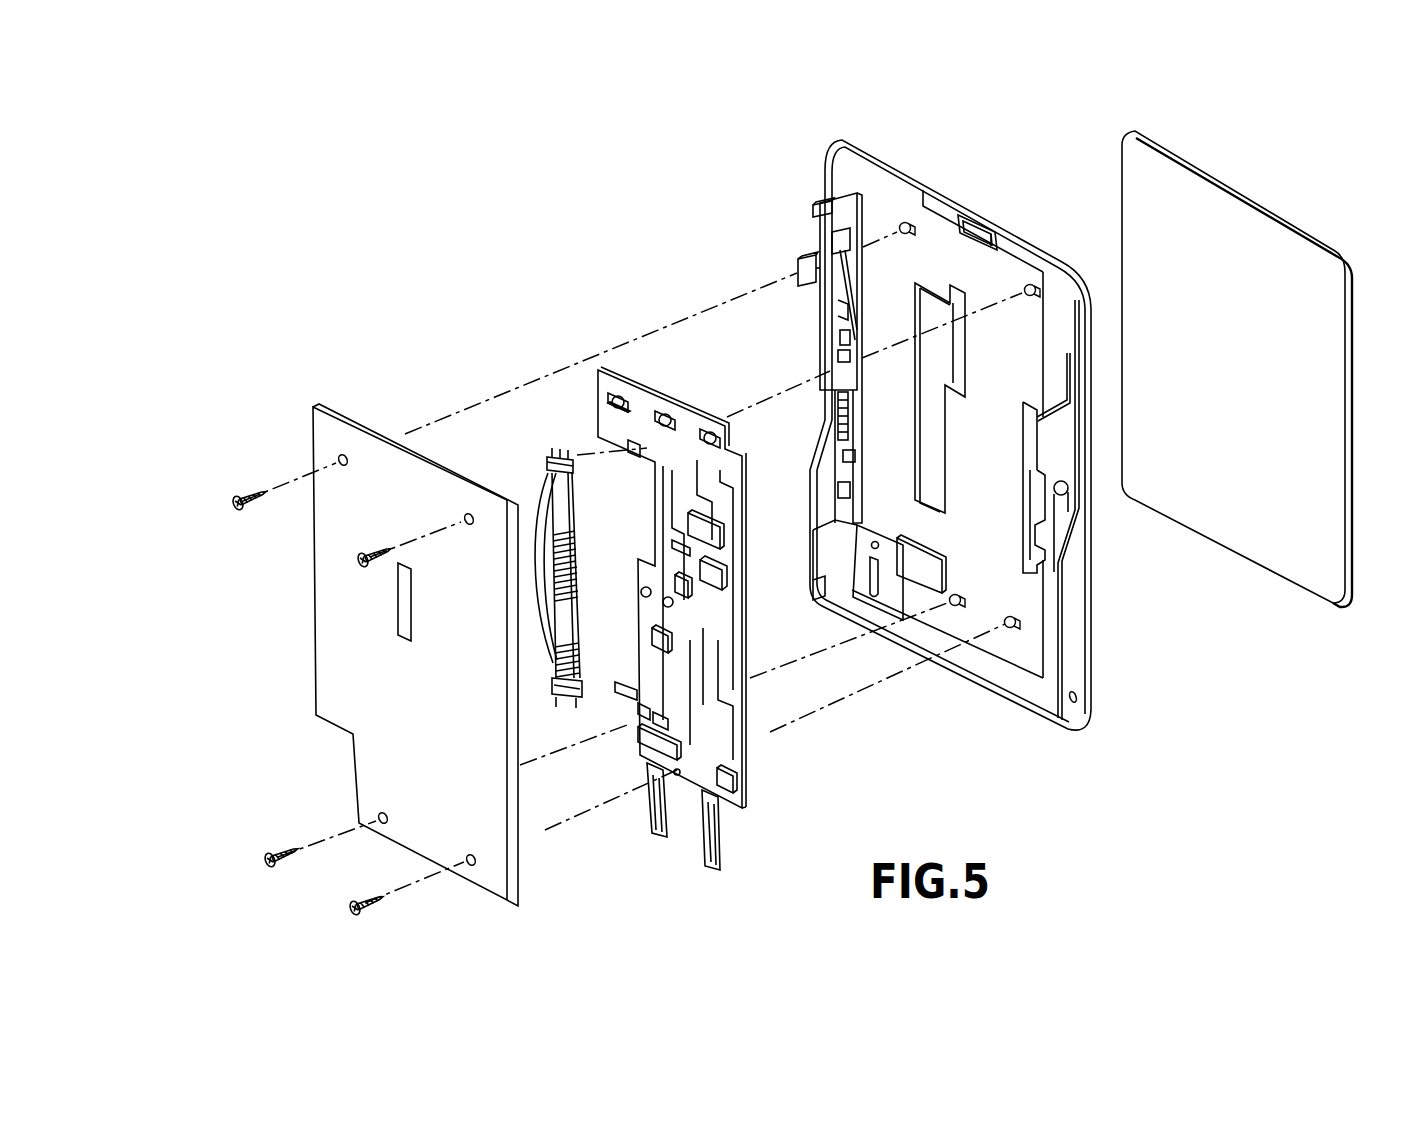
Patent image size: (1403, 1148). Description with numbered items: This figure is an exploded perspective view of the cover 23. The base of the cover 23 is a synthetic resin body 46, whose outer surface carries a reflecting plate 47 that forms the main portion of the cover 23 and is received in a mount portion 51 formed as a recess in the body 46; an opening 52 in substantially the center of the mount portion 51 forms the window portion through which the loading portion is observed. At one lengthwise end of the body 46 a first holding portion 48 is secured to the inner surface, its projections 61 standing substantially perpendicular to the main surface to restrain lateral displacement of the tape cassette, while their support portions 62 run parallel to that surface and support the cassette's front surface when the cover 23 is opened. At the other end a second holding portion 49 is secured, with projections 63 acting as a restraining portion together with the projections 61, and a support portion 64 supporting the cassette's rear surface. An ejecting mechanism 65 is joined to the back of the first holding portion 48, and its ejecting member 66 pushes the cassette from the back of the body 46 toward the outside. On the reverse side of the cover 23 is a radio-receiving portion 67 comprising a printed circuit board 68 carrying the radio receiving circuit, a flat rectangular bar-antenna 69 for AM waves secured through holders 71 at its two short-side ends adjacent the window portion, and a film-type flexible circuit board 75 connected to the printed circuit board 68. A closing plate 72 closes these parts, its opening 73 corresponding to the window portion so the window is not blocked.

The cover 23 is at (1376, 754).
The body 46 is at (1083, 737).
The reflecting plate 47 is at (1315, 588).
The first holding portion 48 is at (820, 230).
The second holding portion 49 is at (1055, 445).
The mount portion 51 is at (1100, 627).
The opening 52 is at (965, 337).
The projections 61 is at (824, 205).
The support portions 62 is at (808, 277).
The projections 63 is at (1047, 417).
The support portion 64 is at (1020, 517).
The ejecting mechanism 65 is at (950, 571).
The ejecting member 66 is at (853, 522).
The radio-receiving portion 67 is at (737, 874).
The printed circuit board 68 is at (727, 725).
The bar-antenna 69 is at (567, 623).
The holders 71 is at (577, 473).
The closing plate 72 is at (487, 882).
The opening 73 is at (411, 608).
The film-type flexible circuit board 75 is at (645, 820).